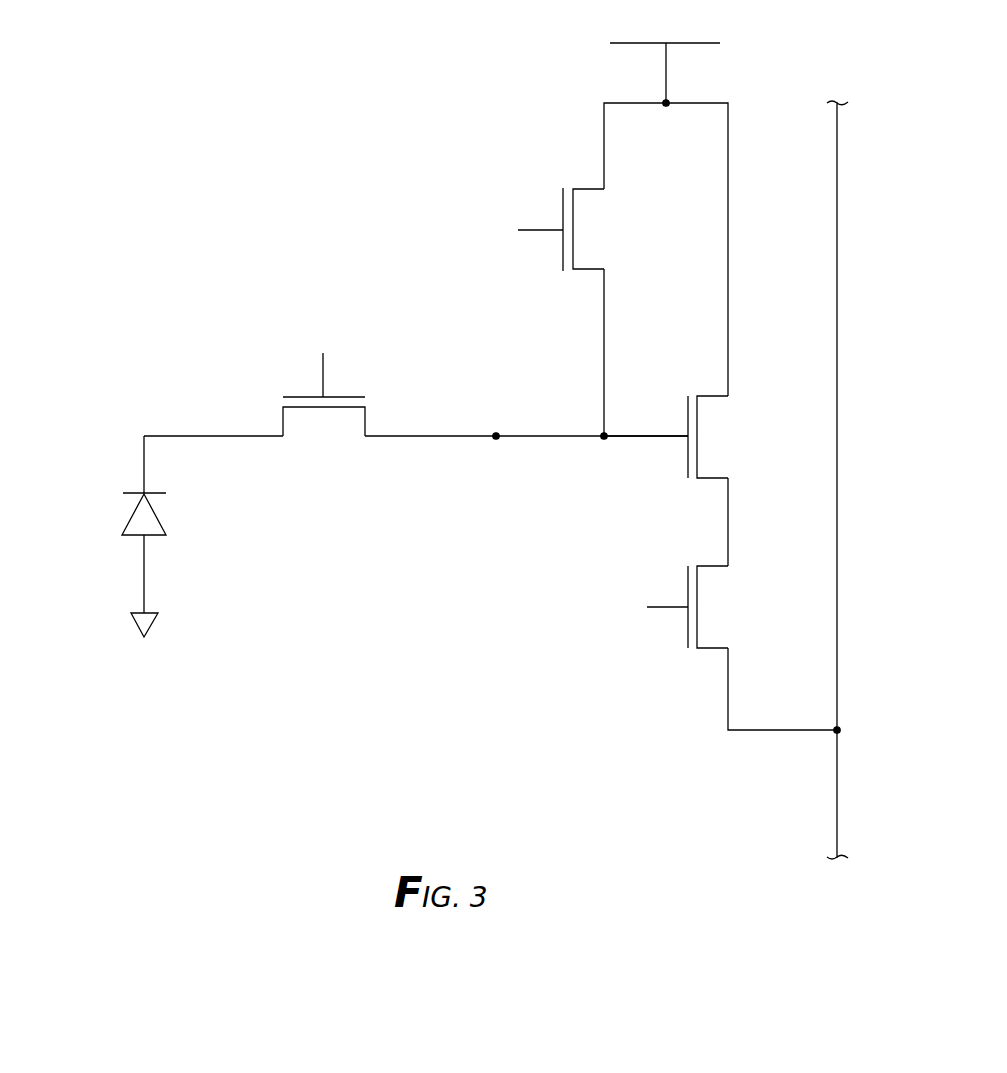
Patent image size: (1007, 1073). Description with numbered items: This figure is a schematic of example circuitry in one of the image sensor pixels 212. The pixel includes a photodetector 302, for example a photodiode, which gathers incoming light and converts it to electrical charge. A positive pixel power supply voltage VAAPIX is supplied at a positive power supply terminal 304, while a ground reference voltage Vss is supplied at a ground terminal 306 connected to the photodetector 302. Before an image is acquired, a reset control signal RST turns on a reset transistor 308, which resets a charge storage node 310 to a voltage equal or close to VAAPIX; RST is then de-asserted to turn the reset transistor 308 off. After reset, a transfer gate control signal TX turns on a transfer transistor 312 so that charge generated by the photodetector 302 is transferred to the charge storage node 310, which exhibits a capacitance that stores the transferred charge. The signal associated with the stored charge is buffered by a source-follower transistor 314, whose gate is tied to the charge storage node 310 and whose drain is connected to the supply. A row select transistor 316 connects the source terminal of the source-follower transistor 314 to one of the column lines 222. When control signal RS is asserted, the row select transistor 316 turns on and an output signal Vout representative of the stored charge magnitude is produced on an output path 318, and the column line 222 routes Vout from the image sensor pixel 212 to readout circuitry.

The image sensor pixel 212 is at (303, 88).
The column line 222 is at (837, 283).
The photodetector 302 is at (128, 517).
The positive power supply terminal 304 is at (614, 42).
The ground terminal 306 is at (153, 628).
The reset transistor 308 is at (590, 189).
The charge storage node 310 is at (494, 430).
The transfer transistor 312 is at (283, 420).
The source-follower transistor 314 is at (712, 395).
The row select transistor 316 is at (712, 566).
The output path 318 is at (820, 733).